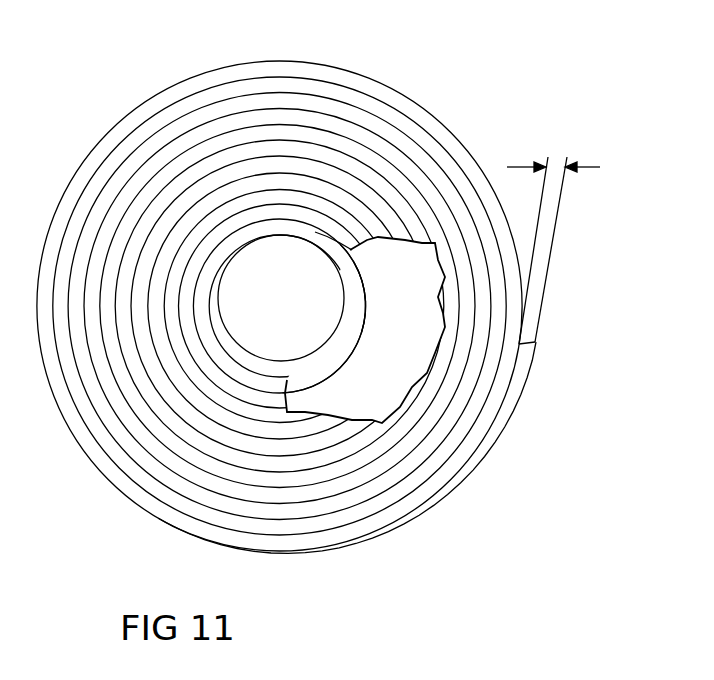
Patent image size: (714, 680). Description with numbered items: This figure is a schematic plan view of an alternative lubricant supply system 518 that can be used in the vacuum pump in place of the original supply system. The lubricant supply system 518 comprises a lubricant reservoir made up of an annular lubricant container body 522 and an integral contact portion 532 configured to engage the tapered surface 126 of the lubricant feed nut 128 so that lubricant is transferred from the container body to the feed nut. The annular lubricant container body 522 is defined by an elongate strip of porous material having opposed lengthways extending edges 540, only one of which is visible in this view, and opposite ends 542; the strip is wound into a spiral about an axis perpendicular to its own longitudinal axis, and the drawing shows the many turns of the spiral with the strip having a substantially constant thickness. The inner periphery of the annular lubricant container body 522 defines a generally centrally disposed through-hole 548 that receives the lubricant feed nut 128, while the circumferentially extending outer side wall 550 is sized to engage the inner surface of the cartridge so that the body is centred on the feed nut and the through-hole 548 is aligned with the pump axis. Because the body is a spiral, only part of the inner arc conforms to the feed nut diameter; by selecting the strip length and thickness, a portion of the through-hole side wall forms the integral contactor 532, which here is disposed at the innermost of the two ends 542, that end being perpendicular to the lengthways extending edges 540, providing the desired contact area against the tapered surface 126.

The lubricant supply system 518 is at (328, 299).
The annular lubricant container body 522 is at (463, 128).
The lengthways extending edges 540 is at (125, 148).
The ends 542 is at (529, 341).
The through-hole 548 is at (349, 322).
The integral contact portion 532 is at (352, 250).
The tapered surface 126 is at (288, 368).
The lubricant feed nut 128 is at (302, 308).
The outer side wall 550 is at (432, 505).